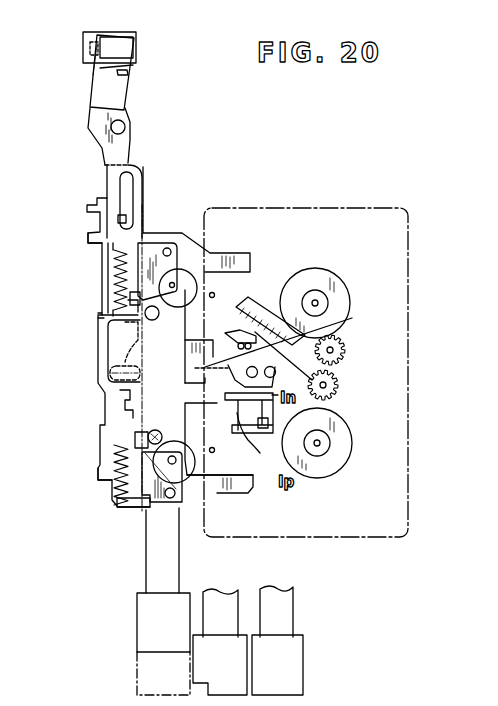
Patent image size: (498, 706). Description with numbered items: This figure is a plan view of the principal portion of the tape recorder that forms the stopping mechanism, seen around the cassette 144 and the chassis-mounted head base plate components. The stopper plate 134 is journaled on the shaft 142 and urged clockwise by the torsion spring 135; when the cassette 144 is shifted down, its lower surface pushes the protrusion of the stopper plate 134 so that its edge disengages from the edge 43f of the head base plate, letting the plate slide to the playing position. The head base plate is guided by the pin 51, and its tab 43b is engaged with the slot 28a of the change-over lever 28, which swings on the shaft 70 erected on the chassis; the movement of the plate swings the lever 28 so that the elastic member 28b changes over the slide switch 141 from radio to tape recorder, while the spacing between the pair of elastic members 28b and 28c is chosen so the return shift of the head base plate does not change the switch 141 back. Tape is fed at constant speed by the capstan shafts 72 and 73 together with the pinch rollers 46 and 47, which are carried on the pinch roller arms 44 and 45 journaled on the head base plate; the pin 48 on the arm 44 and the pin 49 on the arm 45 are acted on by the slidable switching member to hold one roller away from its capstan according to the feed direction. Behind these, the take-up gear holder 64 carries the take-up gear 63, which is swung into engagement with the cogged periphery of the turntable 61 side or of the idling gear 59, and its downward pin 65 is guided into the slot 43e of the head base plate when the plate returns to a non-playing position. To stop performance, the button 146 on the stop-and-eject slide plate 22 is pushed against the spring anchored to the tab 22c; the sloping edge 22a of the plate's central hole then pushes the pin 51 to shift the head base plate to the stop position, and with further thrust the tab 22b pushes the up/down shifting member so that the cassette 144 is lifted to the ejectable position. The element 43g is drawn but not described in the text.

The slide switch 141 is at (125, 48).
The elastic member 28b is at (93, 85).
The elastic member 28c is at (135, 64).
The change-over lever 28 is at (90, 118).
The shaft 70 is at (127, 125).
The slot 28a is at (125, 210).
The tab 43b is at (117, 217).
The pinch roller arm 44 is at (155, 235).
The tab 22c is at (88, 238).
The pin 48 is at (107, 300).
The edge 43f is at (98, 317).
The sloping edge 22a is at (120, 343).
The pinch roller 46 is at (199, 381).
The pin 51 is at (140, 376).
The pin 49 is at (155, 430).
The stop block 43g is at (133, 432).
The tab 22b is at (98, 472).
The pinch roller arm 45 is at (128, 502).
The pinch roller 47 is at (187, 508).
The stop-and-eject slide plate 22 is at (148, 558).
The button 146 is at (142, 615).
The cassette 144 is at (410, 277).
The turntable 61 is at (338, 287).
The take-up gear holder 64 is at (253, 307).
The capstan shaft 72 is at (214, 295).
The pin 65 is at (230, 337).
The slot 43e is at (333, 322).
The idling gear 59 is at (345, 347).
The take-up gear 63 is at (337, 387).
The shaft 142 is at (330, 410).
The torsion spring 135 is at (214, 450).
The capstan shaft 73 is at (200, 475).
The stopper plate 134 is at (252, 420).